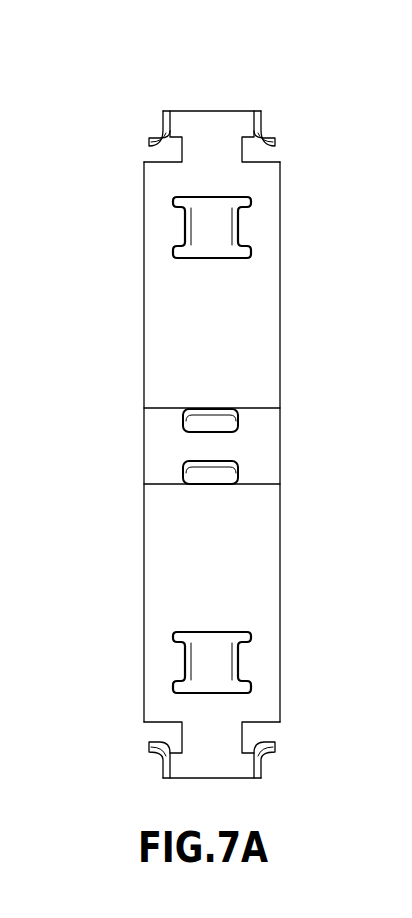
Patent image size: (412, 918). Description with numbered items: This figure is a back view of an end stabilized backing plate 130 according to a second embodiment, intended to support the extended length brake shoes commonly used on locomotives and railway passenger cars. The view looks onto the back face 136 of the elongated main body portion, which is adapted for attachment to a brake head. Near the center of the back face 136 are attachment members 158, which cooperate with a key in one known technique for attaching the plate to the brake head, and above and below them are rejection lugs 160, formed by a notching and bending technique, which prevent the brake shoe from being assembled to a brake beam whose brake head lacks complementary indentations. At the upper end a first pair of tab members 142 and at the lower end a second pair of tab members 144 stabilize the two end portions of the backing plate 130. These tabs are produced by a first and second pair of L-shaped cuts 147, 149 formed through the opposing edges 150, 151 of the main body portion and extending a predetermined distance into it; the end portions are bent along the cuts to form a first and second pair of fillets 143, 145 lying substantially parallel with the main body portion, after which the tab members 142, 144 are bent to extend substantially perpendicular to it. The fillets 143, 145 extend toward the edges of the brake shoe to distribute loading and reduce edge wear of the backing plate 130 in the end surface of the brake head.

The end stabilized backing plate 130 is at (88, 443).
The back face 136 is at (167, 329).
The first pair of tab members 142 is at (165, 120).
The first pair of fillets 143 is at (150, 142).
The second pair of tab members 144 is at (158, 770).
The second pair of fillets 145 is at (155, 748).
The first pair of L-shaped cuts 147 is at (178, 148).
The second pair of L-shaped cuts 149 is at (163, 735).
The opposing edge 150 is at (143, 213).
The opposing edge 151 is at (283, 205).
The attachment members 158 is at (217, 425).
The rejection lugs 160 is at (183, 223).